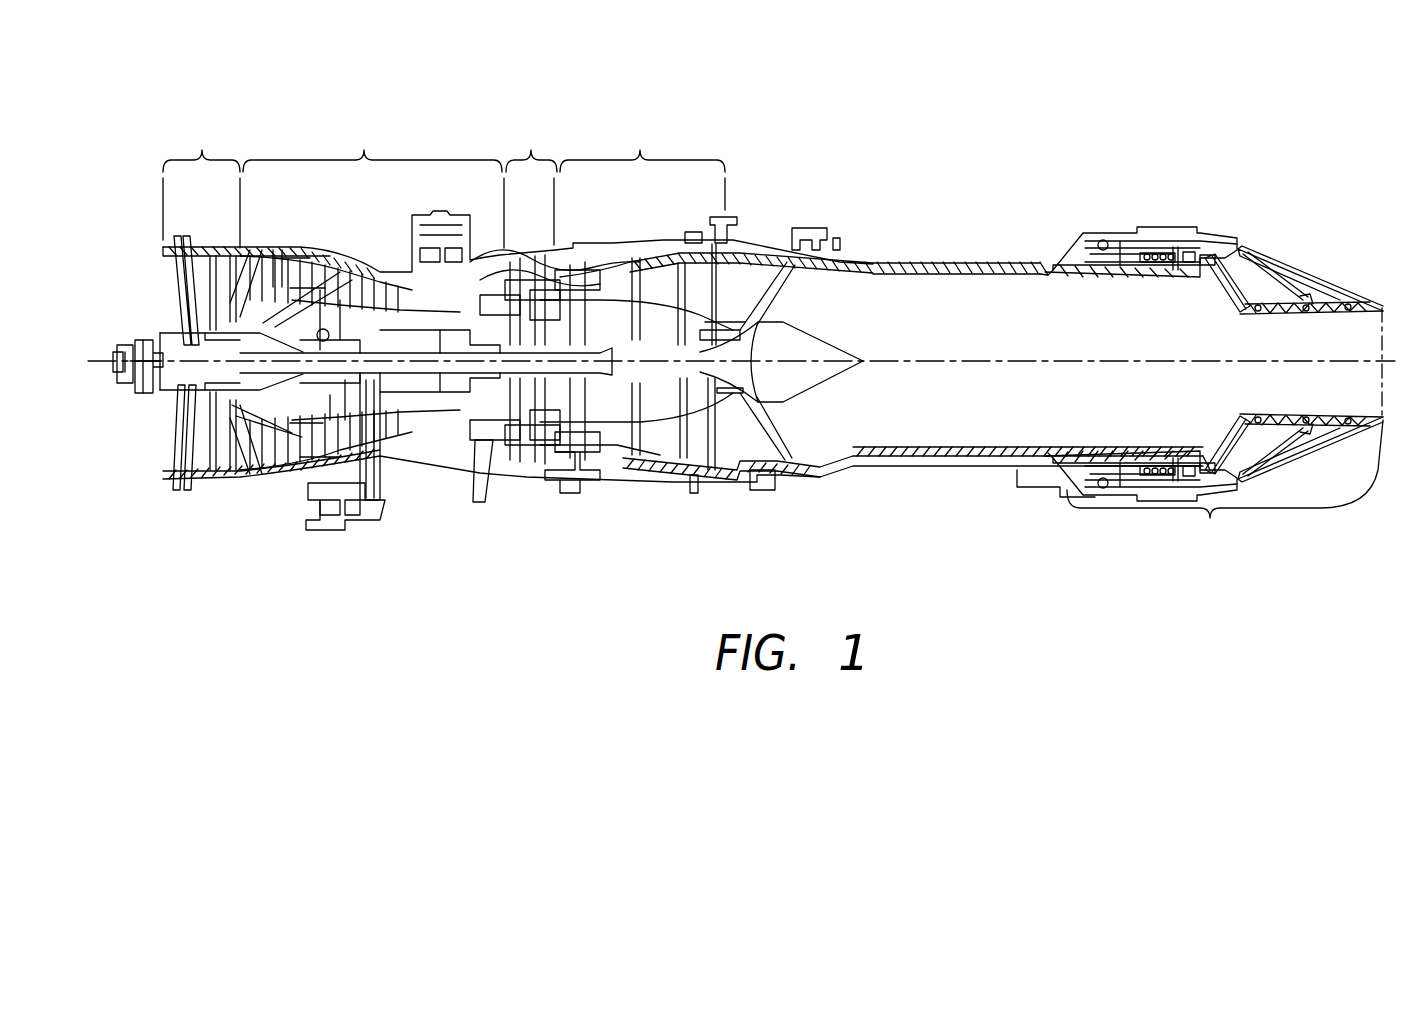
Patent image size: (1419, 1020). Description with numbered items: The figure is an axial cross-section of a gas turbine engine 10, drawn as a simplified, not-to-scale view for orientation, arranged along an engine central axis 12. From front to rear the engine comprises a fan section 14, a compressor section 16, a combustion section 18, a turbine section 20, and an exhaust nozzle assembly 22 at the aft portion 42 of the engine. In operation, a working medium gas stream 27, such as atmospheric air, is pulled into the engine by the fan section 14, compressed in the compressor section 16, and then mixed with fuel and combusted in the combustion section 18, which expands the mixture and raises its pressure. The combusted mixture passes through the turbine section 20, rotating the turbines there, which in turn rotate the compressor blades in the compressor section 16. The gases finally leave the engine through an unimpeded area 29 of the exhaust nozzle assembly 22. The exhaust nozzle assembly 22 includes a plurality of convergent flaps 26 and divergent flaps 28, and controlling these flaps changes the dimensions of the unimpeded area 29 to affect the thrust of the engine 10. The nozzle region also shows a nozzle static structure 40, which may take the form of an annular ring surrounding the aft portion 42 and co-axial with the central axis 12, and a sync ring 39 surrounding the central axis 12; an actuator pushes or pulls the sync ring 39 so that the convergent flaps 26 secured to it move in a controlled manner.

The gas turbine engine 10 is at (1213, 150).
The engine central axis 12 is at (107, 361).
The fan section 14 is at (267, 306).
The compressor section 16 is at (440, 326).
The combustion section 18 is at (552, 293).
The turbine section 20 is at (871, 307).
The exhaust nozzle assembly 22 is at (1225, 489).
The convergent flaps 26 is at (1222, 292).
The working medium gas stream 27 is at (148, 393).
The divergent flaps 28 is at (1303, 312).
The unimpeded area 29 is at (1380, 388).
The sync ring 39 is at (1233, 483).
The nozzle static structure 40 is at (1195, 252).
The aft portion 42 is at (990, 250).